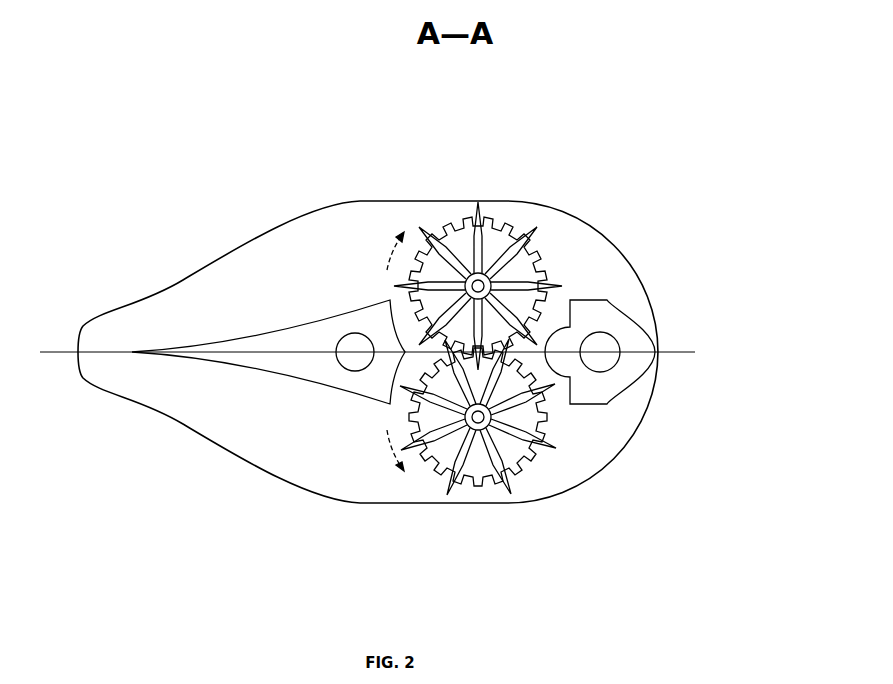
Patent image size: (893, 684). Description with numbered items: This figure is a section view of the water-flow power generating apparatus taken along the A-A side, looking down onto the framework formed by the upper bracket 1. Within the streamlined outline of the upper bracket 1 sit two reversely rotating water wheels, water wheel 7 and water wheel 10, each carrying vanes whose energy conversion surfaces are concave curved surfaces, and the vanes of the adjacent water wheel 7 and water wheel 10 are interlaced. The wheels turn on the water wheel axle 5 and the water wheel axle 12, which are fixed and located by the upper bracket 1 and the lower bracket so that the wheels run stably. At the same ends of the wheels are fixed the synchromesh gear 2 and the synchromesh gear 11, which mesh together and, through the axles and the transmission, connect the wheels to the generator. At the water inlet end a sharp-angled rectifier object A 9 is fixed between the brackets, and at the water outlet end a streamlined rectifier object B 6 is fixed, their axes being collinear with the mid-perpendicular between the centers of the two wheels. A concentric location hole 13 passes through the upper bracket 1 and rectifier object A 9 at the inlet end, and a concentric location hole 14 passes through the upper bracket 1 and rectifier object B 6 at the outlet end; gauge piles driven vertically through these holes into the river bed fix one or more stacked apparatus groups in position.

The upper bracket 1 is at (278, 307).
The synchromesh gear 2 is at (527, 470).
The water wheel axle 5 is at (440, 463).
The rectifier object B 6 is at (627, 336).
The water wheel 7 is at (455, 493).
The rectifier object A 9 is at (330, 367).
The water wheel 10 is at (428, 228).
The synchromesh gear 11 is at (540, 257).
The water wheel axle 12 is at (490, 275).
The location hole 13 is at (355, 345).
The location hole 14 is at (605, 358).